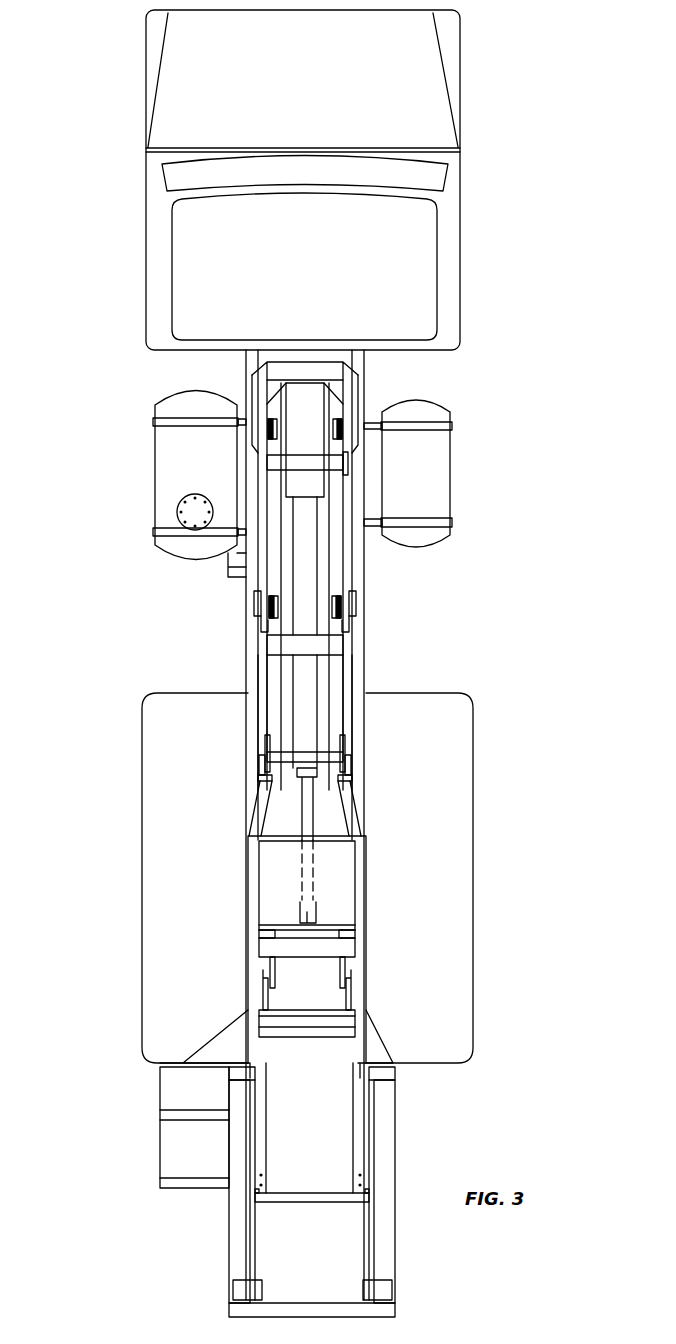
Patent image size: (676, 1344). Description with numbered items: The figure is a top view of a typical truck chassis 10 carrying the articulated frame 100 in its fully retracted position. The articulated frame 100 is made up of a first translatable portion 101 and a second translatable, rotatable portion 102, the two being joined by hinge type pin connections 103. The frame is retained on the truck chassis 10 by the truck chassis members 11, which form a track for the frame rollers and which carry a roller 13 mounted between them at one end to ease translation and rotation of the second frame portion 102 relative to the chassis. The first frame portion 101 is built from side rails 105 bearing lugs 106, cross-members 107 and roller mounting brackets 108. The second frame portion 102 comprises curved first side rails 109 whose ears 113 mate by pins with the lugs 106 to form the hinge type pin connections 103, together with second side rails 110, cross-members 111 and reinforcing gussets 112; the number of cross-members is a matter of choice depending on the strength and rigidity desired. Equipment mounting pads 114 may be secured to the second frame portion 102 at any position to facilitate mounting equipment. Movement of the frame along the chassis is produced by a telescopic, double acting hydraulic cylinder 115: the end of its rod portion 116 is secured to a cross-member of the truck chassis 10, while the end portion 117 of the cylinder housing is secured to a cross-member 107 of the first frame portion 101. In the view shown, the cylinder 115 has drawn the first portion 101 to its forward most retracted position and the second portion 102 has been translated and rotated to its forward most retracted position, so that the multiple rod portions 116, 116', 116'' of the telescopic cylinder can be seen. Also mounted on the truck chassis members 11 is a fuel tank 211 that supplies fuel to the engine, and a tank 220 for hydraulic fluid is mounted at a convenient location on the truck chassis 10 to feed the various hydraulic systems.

The truck chassis 10 is at (98, 40).
The truck chassis members 11 is at (252, 583).
The roller 13 is at (322, 1197).
The articulated frame 100 is at (230, 685).
The first translatable portion 101 is at (265, 708).
The second translatable, rotatable portion 102 is at (255, 917).
The hinge type pin connection 103 is at (349, 763).
The side rails 105 is at (258, 394).
The lugs 106 is at (266, 742).
The cross-members 107 is at (303, 373).
The roller mounting brackets 108 is at (333, 429).
The curved first side rails 109 is at (255, 868).
The second side rails 110 is at (382, 1232).
The cross-members 111 is at (348, 897).
The reinforcing gussets 112 is at (240, 1055).
The ears 113 is at (262, 762).
The equipment mounting pads 114 is at (176, 1147).
The telescopic, double acting, hydraulic cylinder 115 is at (316, 479).
The rod portion 116 is at (356, 881).
The rod portion 116' is at (356, 747).
The rod portion 116'' is at (357, 566).
The end portion of the cylinder housing 117 is at (313, 380).
The fuel tank 211 is at (449, 478).
The tank 220 is at (165, 483).